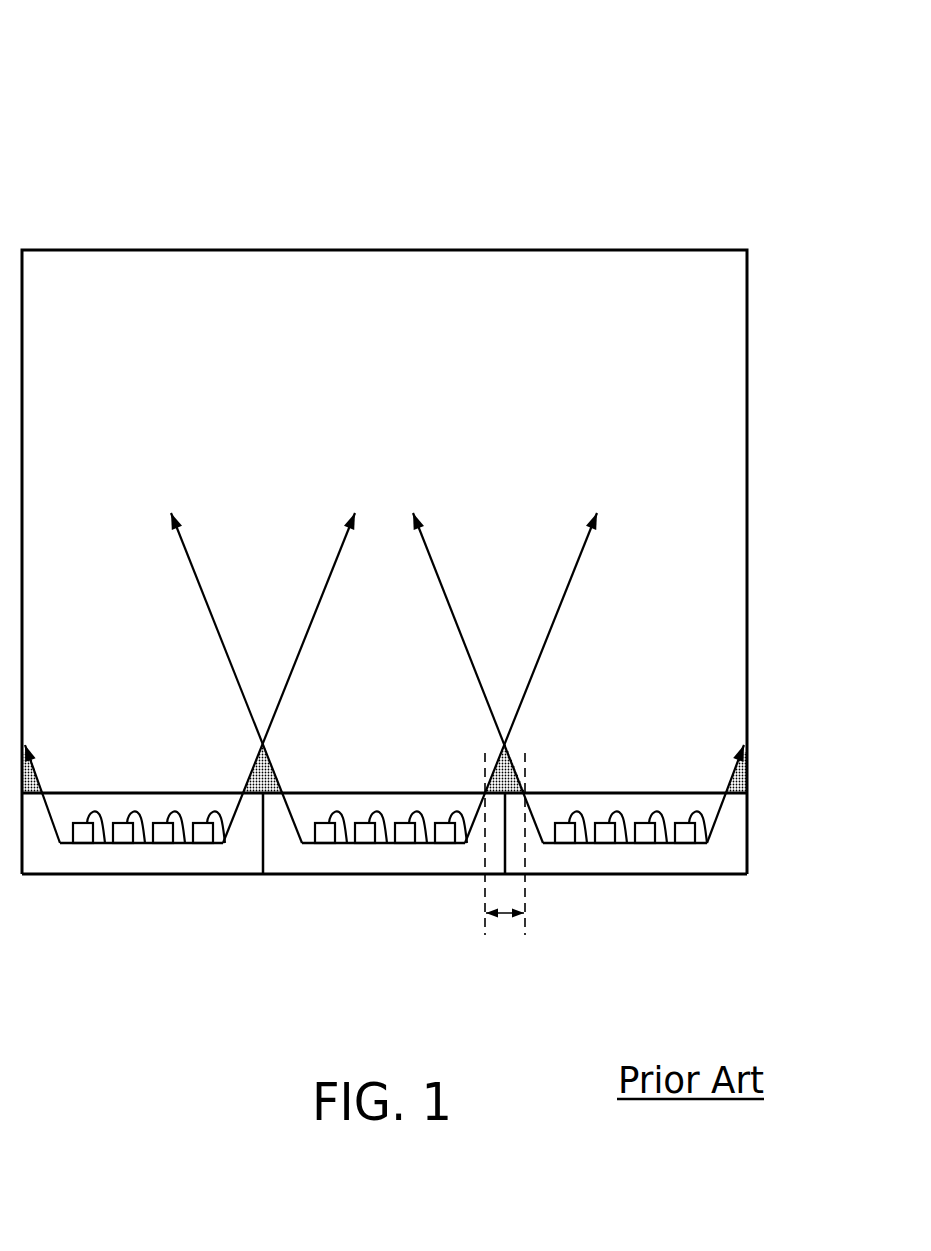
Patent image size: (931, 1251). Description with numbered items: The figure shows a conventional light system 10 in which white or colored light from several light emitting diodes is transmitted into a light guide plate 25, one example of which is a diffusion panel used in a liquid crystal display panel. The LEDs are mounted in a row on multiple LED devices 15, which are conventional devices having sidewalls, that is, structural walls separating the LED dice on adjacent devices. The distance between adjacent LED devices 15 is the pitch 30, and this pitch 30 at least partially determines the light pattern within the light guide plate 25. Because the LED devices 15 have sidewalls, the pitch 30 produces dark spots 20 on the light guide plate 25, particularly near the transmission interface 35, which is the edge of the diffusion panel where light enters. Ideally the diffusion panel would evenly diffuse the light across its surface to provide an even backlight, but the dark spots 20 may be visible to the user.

The light system 10 is at (224, 70).
The LED device 15 is at (168, 862).
The dark spot 20 is at (750, 780).
The light guide plate 25 is at (548, 297).
The pitch 30 is at (500, 915).
The transmission interface 35 is at (667, 808).